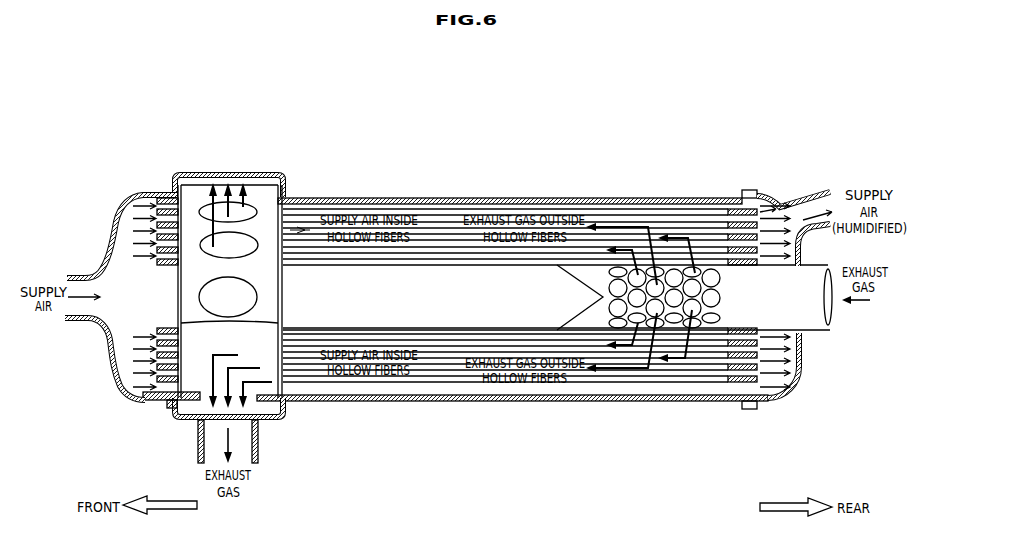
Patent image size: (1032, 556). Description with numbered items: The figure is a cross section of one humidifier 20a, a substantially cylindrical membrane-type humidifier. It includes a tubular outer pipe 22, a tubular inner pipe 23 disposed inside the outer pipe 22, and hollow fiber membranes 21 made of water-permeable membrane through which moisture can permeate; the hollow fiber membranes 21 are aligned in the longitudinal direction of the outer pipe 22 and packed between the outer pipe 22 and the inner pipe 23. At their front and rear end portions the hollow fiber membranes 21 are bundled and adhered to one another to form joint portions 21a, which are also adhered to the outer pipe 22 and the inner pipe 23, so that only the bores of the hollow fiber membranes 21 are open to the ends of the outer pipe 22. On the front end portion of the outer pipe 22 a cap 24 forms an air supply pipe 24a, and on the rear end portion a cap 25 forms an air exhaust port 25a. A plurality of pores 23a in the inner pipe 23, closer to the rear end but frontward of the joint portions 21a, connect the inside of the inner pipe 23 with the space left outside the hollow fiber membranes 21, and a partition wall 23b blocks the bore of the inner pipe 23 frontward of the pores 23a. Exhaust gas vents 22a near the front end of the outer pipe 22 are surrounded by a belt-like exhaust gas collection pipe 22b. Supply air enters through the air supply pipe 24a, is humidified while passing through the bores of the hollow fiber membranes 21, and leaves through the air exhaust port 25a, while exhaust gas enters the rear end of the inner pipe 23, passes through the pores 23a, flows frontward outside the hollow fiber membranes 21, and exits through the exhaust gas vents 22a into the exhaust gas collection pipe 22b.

The humidifier 20a is at (376, 168).
The hollow fiber membranes 21 is at (428, 230).
The joint portions 21a is at (150, 400).
The outer pipe 22 is at (547, 197).
The exhaust gas vents 22a is at (252, 238).
The exhaust gas collection pipe 22b is at (288, 409).
The inner pipe 23 is at (813, 333).
The pores 23a is at (715, 300).
The partition wall 23b is at (580, 288).
The cap 24 is at (115, 228).
The air supply pipe 24a is at (80, 272).
The cap 25 is at (772, 195).
The air exhaust port 25a is at (795, 200).